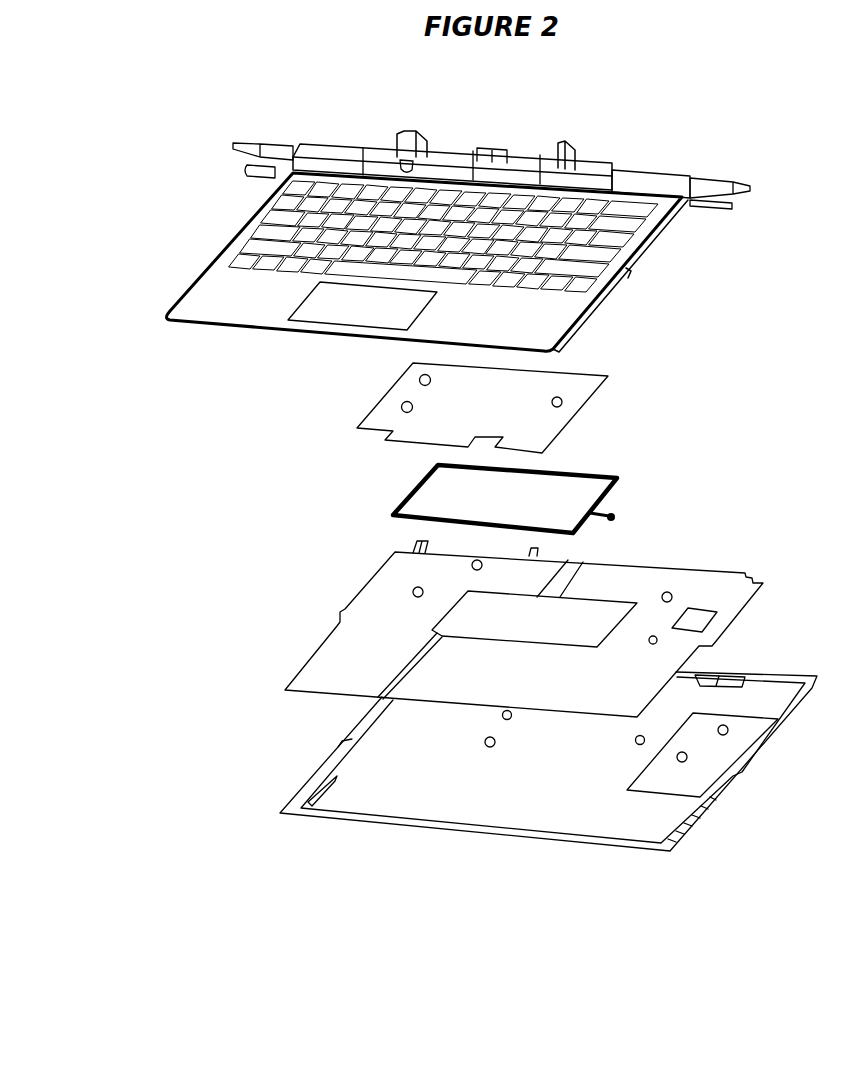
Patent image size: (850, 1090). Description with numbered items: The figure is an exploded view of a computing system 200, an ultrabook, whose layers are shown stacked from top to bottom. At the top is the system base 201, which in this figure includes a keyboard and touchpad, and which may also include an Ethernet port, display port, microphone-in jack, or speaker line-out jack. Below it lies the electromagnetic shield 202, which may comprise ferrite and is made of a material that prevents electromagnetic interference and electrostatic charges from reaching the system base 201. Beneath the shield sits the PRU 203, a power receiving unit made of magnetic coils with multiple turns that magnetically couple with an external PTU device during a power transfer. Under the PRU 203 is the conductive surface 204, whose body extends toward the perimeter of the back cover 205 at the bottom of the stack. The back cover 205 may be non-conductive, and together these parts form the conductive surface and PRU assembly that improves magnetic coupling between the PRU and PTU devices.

The computing system 200 is at (133, 188).
The system base 201 is at (675, 228).
The electromagnetic shield 202 is at (578, 398).
The PRU 203 is at (412, 485).
The conductive surface 204 is at (370, 583).
The back cover 205 is at (777, 735).